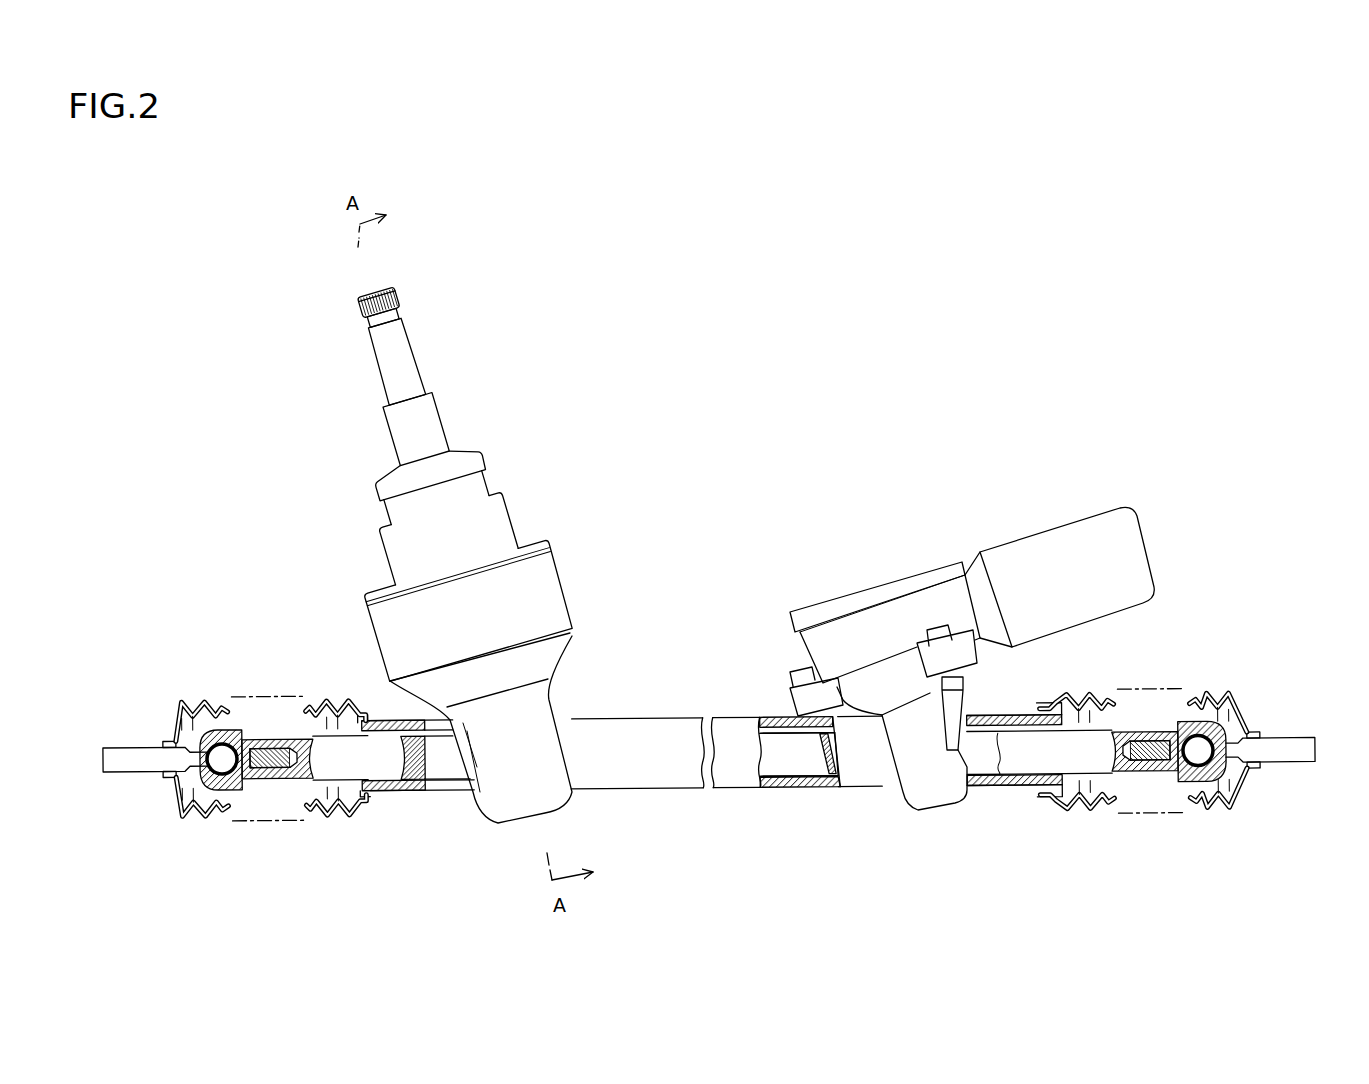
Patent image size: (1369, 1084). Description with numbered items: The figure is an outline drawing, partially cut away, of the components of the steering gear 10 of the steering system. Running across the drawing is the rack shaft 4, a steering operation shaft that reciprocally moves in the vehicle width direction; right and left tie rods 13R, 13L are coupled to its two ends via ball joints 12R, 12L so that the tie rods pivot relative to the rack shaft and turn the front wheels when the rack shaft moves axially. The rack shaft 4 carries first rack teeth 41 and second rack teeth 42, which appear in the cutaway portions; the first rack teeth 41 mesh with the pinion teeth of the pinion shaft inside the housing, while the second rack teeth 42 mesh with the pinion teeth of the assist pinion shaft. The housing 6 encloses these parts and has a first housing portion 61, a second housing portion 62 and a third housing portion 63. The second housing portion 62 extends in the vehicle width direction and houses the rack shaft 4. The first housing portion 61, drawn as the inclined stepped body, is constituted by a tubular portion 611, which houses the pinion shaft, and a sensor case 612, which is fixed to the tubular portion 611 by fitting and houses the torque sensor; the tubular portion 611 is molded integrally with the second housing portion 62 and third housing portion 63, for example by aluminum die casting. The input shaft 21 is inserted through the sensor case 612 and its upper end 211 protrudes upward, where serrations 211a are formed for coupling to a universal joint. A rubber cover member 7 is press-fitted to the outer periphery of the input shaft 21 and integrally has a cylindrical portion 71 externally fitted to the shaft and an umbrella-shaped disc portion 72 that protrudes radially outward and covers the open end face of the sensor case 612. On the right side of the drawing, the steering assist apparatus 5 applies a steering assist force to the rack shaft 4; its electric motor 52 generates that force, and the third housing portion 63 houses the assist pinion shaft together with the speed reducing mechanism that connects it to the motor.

The steering gear 10 is at (1062, 432).
The upper end of input shaft 211 is at (369, 291).
The serrations 211a is at (400, 296).
The input shaft 21 is at (416, 350).
The cover member 7 is at (313, 441).
The cylindrical portion 71 is at (403, 448).
The umbrella-shaped disc portion 72 is at (384, 489).
The first housing portion 61 is at (614, 497).
The sensor case 612 is at (513, 522).
The tubular portion 611 is at (544, 584).
The housing 6 is at (656, 792).
The second housing portion 62 is at (680, 727).
The first rack teeth 41 is at (419, 772).
The rack shaft 4 is at (830, 768).
The second rack teeth 42 is at (817, 762).
The third housing portion 63 is at (919, 782).
The steering assist apparatus 5 is at (790, 638).
The electric motor 52 is at (1086, 512).
The right tie rod 13R is at (126, 748).
The left tie rod 13L is at (1281, 738).
The right ball joint 12R is at (244, 796).
The left ball joint 12L is at (1186, 798).